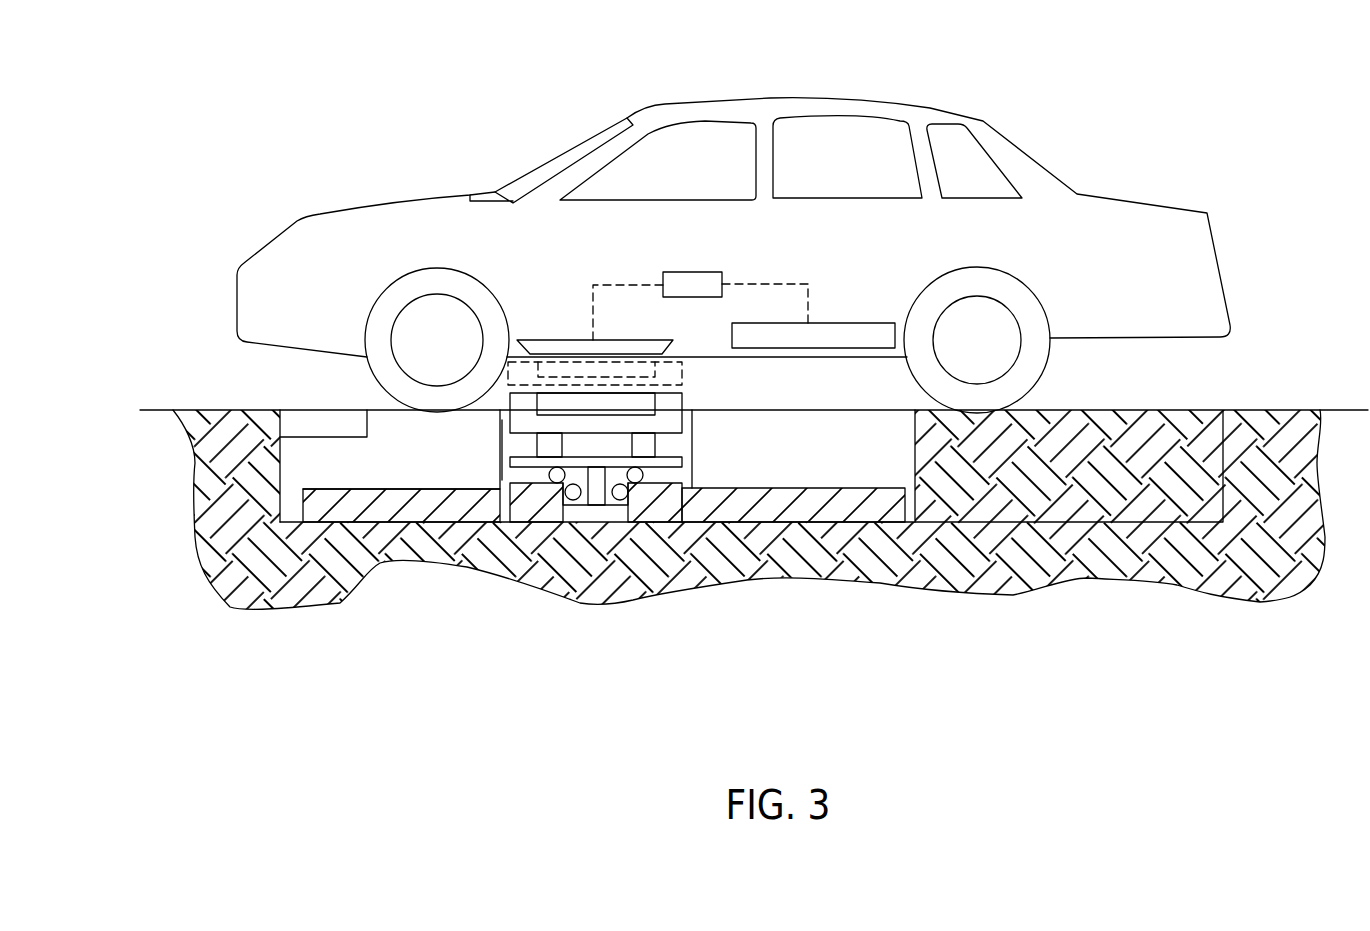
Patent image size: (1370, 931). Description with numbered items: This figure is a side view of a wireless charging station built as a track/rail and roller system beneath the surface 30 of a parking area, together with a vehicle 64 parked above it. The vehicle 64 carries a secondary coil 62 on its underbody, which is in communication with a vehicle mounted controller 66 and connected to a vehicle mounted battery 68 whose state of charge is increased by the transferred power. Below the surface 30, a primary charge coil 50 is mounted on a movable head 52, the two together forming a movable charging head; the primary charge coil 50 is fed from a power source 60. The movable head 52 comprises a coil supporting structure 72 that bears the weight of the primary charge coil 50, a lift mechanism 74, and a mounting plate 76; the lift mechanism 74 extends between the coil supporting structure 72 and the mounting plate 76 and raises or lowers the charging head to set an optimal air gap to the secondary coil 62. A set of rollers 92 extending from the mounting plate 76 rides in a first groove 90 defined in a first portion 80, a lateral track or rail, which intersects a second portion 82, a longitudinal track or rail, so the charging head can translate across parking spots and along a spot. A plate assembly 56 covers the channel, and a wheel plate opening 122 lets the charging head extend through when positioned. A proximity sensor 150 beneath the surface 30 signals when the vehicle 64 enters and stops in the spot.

The surface 30 is at (195, 418).
The primary charge coil 50 is at (565, 417).
The movable head 52 is at (687, 398).
The plate assembly 56 is at (373, 401).
The power source 60 is at (557, 380).
The secondary coil 62 is at (560, 338).
The vehicle 64 is at (400, 126).
The vehicle mounted controller 66 is at (697, 272).
The vehicle mounted battery 68 is at (842, 323).
The coil supporting structure 72 is at (673, 427).
The lift mechanism 74 is at (650, 453).
The mounting plate 76 is at (682, 462).
The first portion 80 is at (540, 520).
The second portion 82 is at (813, 490).
The first groove 90 is at (595, 505).
The set of rollers 92 is at (628, 498).
The wheel plate opening 122 is at (502, 478).
The proximity sensor 150 is at (308, 437).